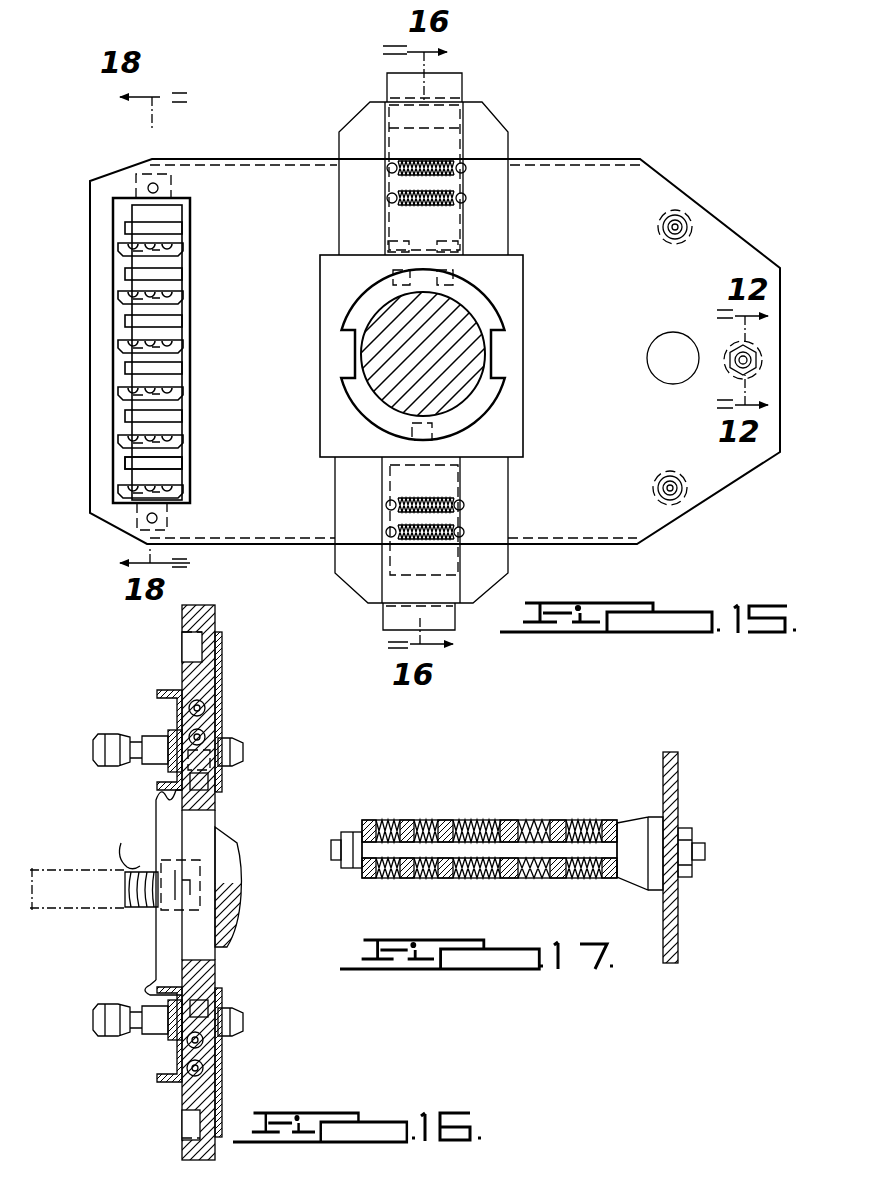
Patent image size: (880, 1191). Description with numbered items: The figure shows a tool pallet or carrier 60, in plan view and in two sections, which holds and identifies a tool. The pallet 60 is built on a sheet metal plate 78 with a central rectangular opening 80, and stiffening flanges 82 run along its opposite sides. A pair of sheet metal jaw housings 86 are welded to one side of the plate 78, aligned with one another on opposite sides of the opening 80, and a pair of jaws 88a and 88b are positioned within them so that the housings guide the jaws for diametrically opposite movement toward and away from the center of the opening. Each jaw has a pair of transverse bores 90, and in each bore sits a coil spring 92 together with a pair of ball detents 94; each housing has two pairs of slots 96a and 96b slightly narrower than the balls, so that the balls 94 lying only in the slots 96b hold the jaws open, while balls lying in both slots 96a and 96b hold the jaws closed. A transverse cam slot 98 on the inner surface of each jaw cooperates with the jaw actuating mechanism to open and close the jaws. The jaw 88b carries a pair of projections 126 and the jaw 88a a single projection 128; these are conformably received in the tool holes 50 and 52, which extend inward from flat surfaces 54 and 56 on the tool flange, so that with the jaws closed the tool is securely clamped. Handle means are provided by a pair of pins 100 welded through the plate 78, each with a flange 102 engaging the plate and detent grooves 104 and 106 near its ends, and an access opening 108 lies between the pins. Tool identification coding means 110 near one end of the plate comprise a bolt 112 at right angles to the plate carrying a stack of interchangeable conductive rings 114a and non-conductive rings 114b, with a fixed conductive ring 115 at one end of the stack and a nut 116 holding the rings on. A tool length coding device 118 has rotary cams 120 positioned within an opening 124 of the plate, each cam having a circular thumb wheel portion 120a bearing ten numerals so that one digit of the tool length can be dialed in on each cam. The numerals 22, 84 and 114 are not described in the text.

In FIG. 15, the mounting tab 22 is at (170, 178).
In FIG. 15, the holes 50 is at (456, 283).
In FIG. 15, the hole 52 is at (456, 441).
In FIG. 15, the flat surface 54 is at (426, 270).
In FIG. 15, the flat surface 56 is at (407, 443).
In FIG. 15, the pallet 60 is at (566, 158).
In FIG. 15, the sheet metal plate 78 is at (602, 284).
In FIG. 17, the sheet metal plate 78 is at (672, 908).
In FIG. 15, the central rectangular opening 80 is at (523, 305).
In FIG. 15, the stiffening flanges 82 is at (288, 163).
In FIG. 16, the stiffening flanges 82 is at (165, 692).
In FIG. 16, the hinge block 84 is at (158, 795).
In FIG. 15, the jaw housings 86 is at (514, 241).
In FIG. 15, the jaw 88a is at (383, 620).
In FIG. 16, the jaw 88a is at (205, 1088).
In FIG. 15, the jaw 88b is at (462, 82).
In FIG. 16, the jaw 88b is at (205, 680).
In FIG. 15, the bores 90 is at (443, 352).
In FIG. 15, the coil spring 92 is at (410, 212).
In FIG. 15, the ball detents 94 is at (467, 170).
In FIG. 15, the slots 96a is at (392, 200).
In FIG. 15, the slots 96b is at (393, 170).
In FIG. 15, the cam slot 98 is at (393, 98).
In FIG. 16, the cam slot 98 is at (190, 650).
In FIG. 15, the pins 100 is at (662, 228).
In FIG. 16, the pins 100 is at (145, 745).
In FIG. 16, the flange 102 is at (168, 760).
In FIG. 16, the detent groove 104 is at (120, 1012).
In FIG. 16, the detent groove 106 is at (216, 740).
In FIG. 15, the access opening 108 is at (647, 372).
In FIG. 17, the tool identification coding means 110 is at (490, 818).
In FIG. 15, the bolt 112 is at (755, 361).
In FIG. 17, the bolt 112 is at (420, 845).
In FIG. 16, the shaft 114 is at (130, 875).
In FIG. 17, the electrically conductive rings 114a is at (420, 880).
In FIG. 17, the electrically non-conductive rings 114b is at (480, 880).
In FIG. 17, the fixed conductive ring 115 is at (637, 876).
In FIG. 17, the nut 116 is at (352, 830).
In FIG. 15, the tool length coding device 118 is at (192, 292).
In FIG. 15, the rotary cams 120 is at (187, 250).
In FIG. 15, the thumb wheel portion 120a is at (118, 490).
In FIG. 15, the opening 124 is at (118, 333).
In FIG. 15, the projections 126 is at (398, 268).
In FIG. 15, the projection 128 is at (424, 452).